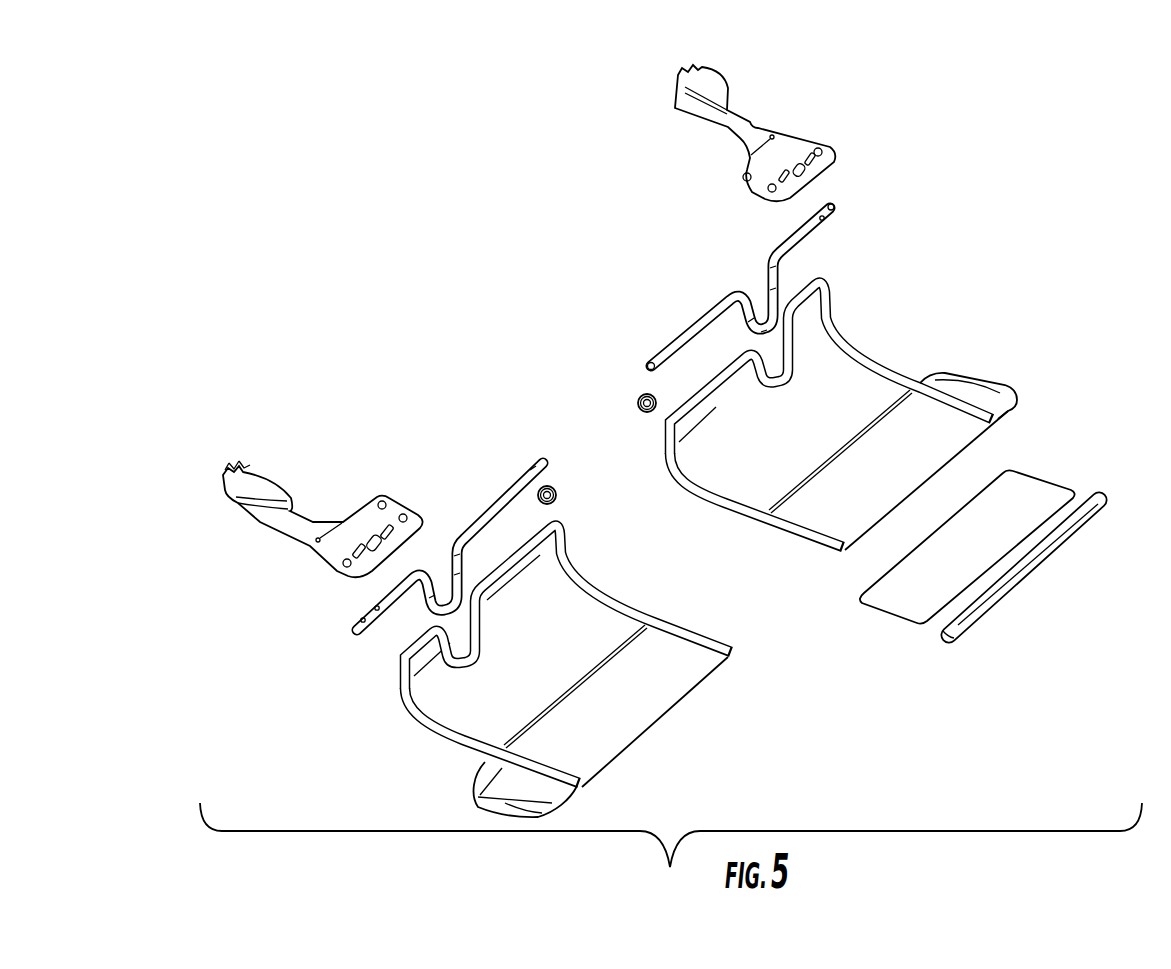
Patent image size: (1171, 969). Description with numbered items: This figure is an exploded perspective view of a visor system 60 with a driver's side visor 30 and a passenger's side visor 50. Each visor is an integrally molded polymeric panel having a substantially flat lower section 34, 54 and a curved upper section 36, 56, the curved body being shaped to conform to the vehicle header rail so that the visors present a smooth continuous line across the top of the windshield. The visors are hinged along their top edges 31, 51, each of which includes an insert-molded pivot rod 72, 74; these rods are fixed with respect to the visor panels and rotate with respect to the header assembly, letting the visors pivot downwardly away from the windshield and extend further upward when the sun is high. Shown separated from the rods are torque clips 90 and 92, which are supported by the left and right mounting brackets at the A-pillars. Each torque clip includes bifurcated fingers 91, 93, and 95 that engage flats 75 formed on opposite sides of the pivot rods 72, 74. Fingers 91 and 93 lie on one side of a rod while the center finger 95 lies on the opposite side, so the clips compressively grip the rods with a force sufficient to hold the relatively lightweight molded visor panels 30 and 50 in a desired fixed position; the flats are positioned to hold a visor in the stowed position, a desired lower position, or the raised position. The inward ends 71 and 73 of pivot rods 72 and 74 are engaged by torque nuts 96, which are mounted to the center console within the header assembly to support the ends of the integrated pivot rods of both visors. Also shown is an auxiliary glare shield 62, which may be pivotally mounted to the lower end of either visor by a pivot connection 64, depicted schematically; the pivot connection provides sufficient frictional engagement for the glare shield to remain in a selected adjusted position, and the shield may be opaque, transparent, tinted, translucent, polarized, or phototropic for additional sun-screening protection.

The driver's side visor 30 is at (843, 394).
The top edge 31 is at (806, 283).
The lower section 34 is at (878, 470).
The upper section 36 is at (713, 403).
The passenger's side visor 50 is at (568, 626).
The top edge 51 is at (529, 537).
The lower section 54 is at (609, 708).
The upper section 56 is at (533, 580).
The visor system 60 is at (991, 476).
The auxiliary glare shield 62 is at (898, 607).
The pivot connection 64 is at (1083, 538).
The inward end 71 is at (832, 203).
The pivot rod 72 is at (774, 257).
The inward end 73 is at (549, 460).
The pivot rod 74 is at (440, 524).
The flats 75 is at (367, 620).
The torque clip 90 is at (753, 123).
The finger 91 is at (241, 468).
The torque clip 92 is at (287, 486).
The finger 93 is at (221, 473).
The center finger 95 is at (230, 469).
The torque nut 96 is at (560, 491).